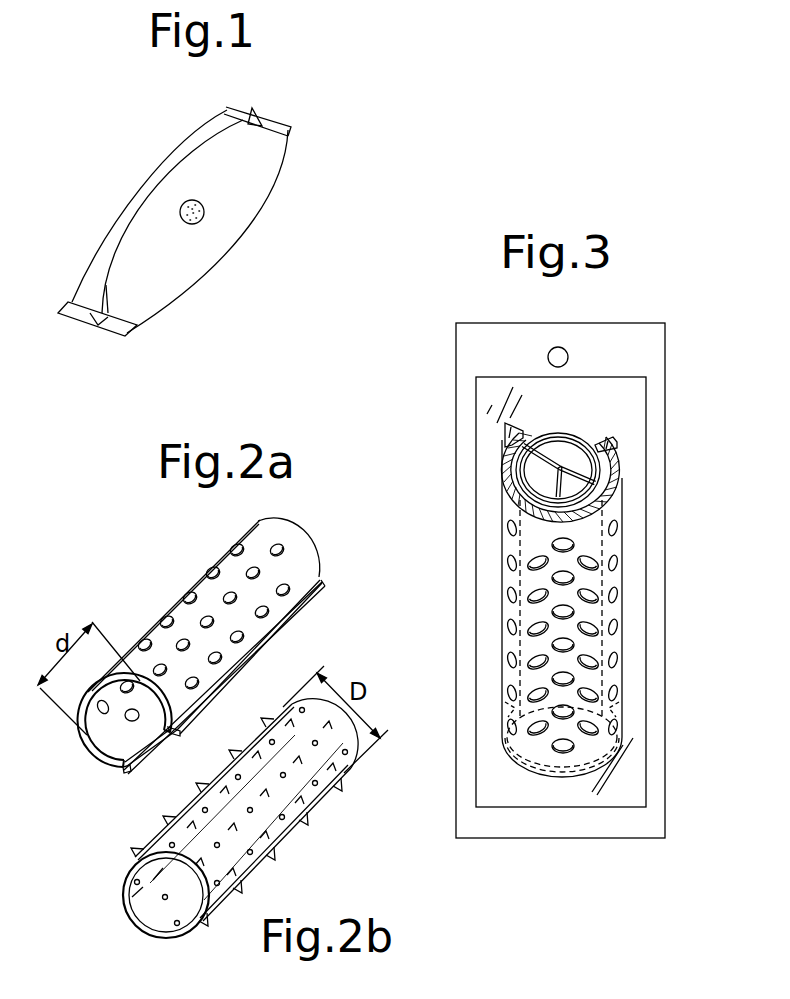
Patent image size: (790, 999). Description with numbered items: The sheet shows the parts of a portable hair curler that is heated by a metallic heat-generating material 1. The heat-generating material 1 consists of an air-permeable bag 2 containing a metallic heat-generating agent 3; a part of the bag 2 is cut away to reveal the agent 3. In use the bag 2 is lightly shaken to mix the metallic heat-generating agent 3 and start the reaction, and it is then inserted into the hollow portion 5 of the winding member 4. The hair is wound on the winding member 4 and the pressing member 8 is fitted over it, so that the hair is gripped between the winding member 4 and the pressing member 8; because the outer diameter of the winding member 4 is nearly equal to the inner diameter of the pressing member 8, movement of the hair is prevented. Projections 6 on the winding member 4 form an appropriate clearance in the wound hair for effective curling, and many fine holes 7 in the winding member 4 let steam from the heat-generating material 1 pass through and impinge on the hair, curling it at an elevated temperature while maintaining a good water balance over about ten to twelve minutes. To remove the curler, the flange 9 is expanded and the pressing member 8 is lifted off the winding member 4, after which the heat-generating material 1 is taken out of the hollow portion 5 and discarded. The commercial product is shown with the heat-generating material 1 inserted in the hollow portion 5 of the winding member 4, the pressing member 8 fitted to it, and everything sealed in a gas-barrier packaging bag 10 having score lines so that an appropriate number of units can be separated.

In FIG. 1, the metallic heat-generating material 1 is at (209, 262).
In FIG. 3, the metallic heat-generating material 1 is at (538, 477).
In FIG. 1, the air-permeable bag 2 is at (96, 264).
In FIG. 1, the metallic heat-generating agent 3 is at (199, 223).
In FIG. 2B, the winding member 4 is at (169, 801).
In FIG. 3, the winding member 4 is at (602, 436).
In FIG. 2B, the hollow portion 5 is at (131, 913).
In FIG. 3, the hollow portion 5 is at (586, 468).
In FIG. 2B, the projections 6 is at (273, 857).
In FIG. 2B, the fine holes 7 is at (288, 818).
In FIG. 2A, the pressing member 8 is at (199, 549).
In FIG. 3, the pressing member 8 is at (497, 540).
In FIG. 2A, the flange 9 is at (323, 580).
In FIG. 3, the packaging bag 10 is at (637, 757).